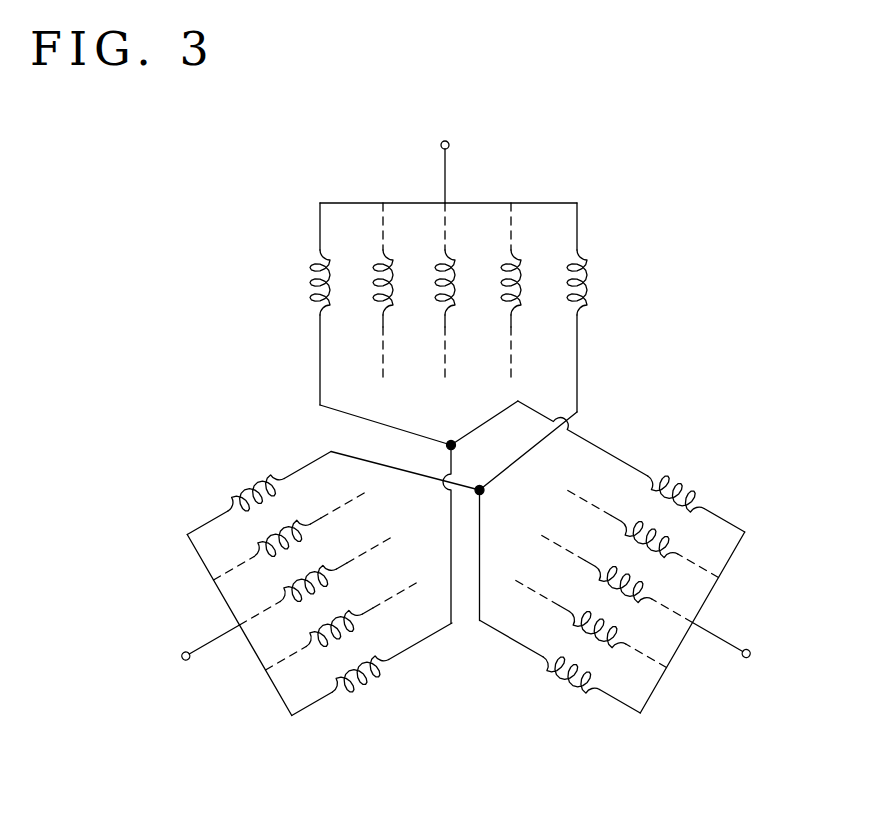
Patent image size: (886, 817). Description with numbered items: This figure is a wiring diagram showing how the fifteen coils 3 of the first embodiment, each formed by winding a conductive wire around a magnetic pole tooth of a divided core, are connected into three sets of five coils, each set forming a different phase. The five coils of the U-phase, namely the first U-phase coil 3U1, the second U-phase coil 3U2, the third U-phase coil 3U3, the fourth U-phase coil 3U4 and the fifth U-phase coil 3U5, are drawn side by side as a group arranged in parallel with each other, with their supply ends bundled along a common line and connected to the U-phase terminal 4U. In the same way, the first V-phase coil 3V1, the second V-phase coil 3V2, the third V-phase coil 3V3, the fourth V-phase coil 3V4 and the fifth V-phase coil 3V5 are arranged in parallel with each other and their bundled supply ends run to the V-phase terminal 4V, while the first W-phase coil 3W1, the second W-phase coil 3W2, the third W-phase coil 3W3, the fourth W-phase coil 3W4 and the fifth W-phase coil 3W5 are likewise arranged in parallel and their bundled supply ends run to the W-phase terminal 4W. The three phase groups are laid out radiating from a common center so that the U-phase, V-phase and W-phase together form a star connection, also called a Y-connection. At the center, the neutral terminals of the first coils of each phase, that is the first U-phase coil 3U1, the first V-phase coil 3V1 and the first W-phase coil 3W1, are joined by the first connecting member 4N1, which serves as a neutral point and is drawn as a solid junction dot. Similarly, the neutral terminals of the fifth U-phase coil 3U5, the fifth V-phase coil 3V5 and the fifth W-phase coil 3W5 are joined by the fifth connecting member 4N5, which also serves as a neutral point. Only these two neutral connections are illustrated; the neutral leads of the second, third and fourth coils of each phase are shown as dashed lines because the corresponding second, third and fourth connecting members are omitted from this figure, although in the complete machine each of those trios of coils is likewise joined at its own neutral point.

The coil 3 is at (266, 259).
The U-phase terminal 4U is at (445, 158).
The V-phase terminal 4V is at (742, 650).
The W-phase terminal 4W is at (188, 652).
The first connecting member 4N1 is at (508, 504).
The fifth connecting member 4N5 is at (479, 456).
The first U-phase coil 3U1 is at (601, 307).
The second U-phase coil 3U2 is at (534, 292).
The third U-phase coil 3U3 is at (468, 292).
The fourth U-phase coil 3U4 is at (405, 292).
The fifth U-phase coil 3U5 is at (342, 304).
The first V-phase coil 3V1 is at (549, 685).
The second V-phase coil 3V2 is at (580, 640).
The third V-phase coil 3V3 is at (605, 596).
The fourth V-phase coil 3V4 is at (630, 551).
The fifth V-phase coil 3V5 is at (621, 484).
The first W-phase coil 3W1 is at (246, 471).
The second W-phase coil 3W2 is at (278, 517).
The third W-phase coil 3W3 is at (304, 561).
The fourth W-phase coil 3W4 is at (330, 607).
The fifth W-phase coil 3W5 is at (360, 649).